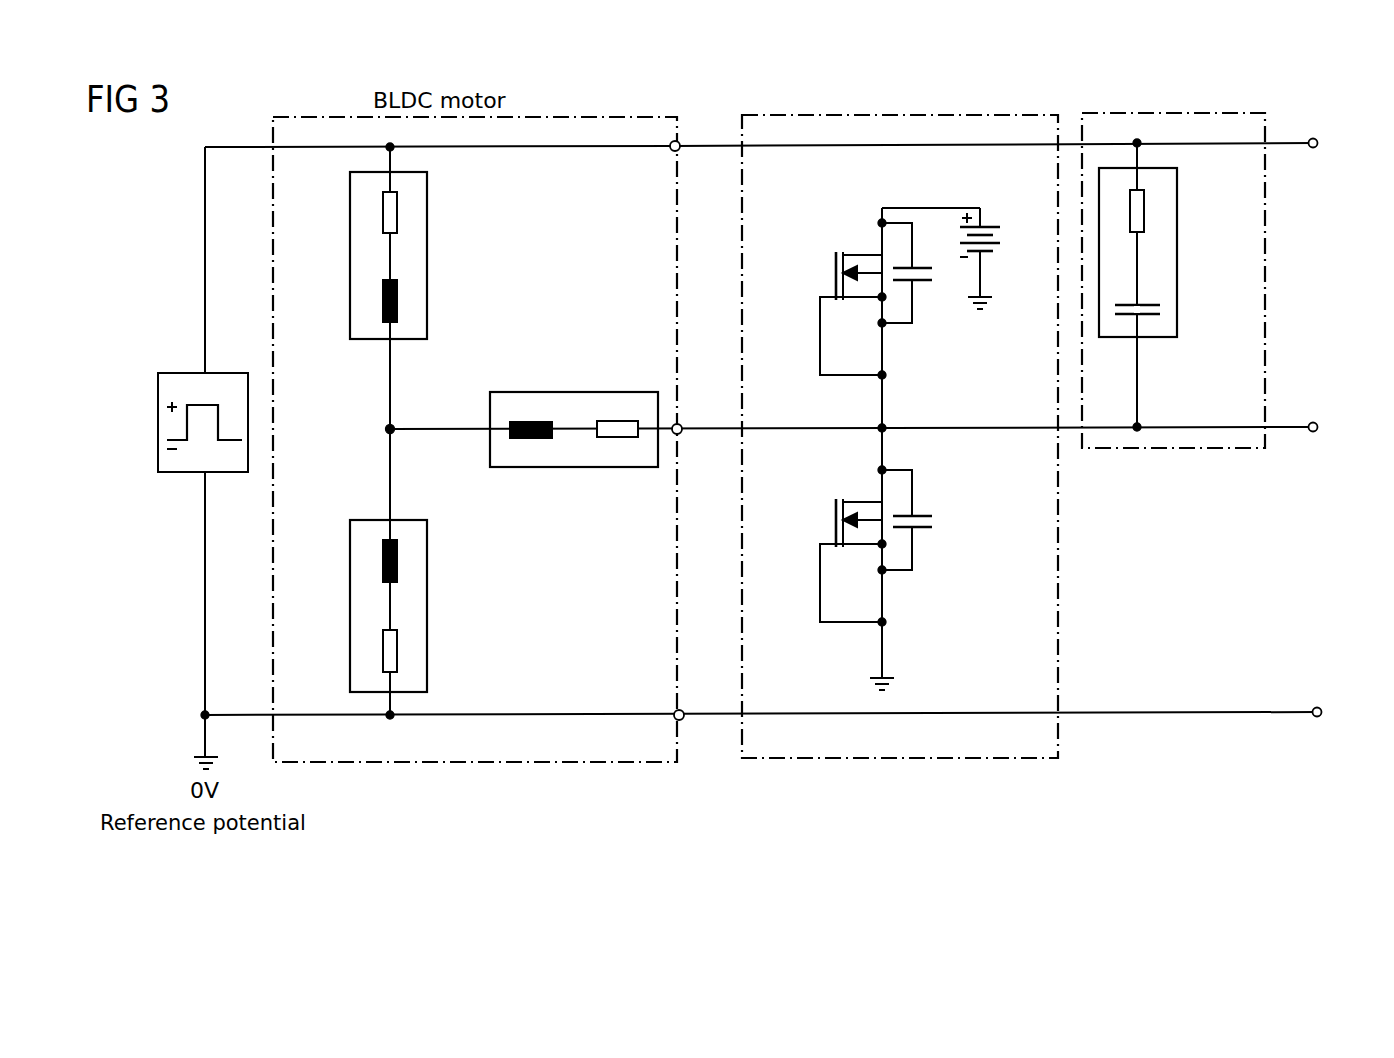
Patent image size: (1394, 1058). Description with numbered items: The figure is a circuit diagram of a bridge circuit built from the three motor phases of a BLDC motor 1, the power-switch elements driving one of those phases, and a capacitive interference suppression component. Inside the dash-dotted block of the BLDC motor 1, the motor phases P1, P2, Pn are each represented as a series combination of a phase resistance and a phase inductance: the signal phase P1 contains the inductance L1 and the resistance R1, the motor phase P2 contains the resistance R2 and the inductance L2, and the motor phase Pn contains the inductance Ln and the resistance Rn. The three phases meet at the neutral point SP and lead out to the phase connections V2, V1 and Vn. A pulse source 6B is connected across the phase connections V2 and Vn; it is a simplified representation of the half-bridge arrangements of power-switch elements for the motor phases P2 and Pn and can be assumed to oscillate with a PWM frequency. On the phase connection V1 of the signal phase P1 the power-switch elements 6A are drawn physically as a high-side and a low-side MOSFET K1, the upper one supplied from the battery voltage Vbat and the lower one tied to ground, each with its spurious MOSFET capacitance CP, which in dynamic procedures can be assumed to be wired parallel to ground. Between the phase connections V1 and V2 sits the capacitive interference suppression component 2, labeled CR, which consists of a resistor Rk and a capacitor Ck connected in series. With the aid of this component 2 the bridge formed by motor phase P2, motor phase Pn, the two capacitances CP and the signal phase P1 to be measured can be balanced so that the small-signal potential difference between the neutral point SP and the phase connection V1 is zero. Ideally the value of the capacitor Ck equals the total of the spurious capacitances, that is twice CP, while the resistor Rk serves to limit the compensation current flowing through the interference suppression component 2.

The BLDC motor 1 is at (503, 762).
The capacitive interference suppression component 2 is at (1200, 280).
The power-switch elements 6A is at (900, 468).
The pulse source 6B is at (158, 422).
The signal phase P1 is at (574, 443).
The motor phase P2 is at (423, 255).
The motor phase Pn is at (423, 606).
The phase resistance R1 is at (617, 421).
The phase resistance R2 is at (397, 212).
The phase resistance Rn is at (397, 652).
The phase inductance L1 is at (532, 422).
The phase inductance L2 is at (397, 300).
The phase inductance Ln is at (397, 560).
The neutral point SP is at (390, 429).
The power-switch element K1 is at (836, 265).
The spurious MOSFET capacitance CP is at (922, 282).
The battery voltage Vbat is at (1007, 260).
The capacitive interference suppression component CR is at (1175, 275).
The resistor Rk is at (1144, 210).
The capacitor Ck is at (1150, 316).
The phase connection V1 is at (1012, 420).
The phase connection V2 is at (1011, 138).
The phase connection Vn is at (1015, 702).